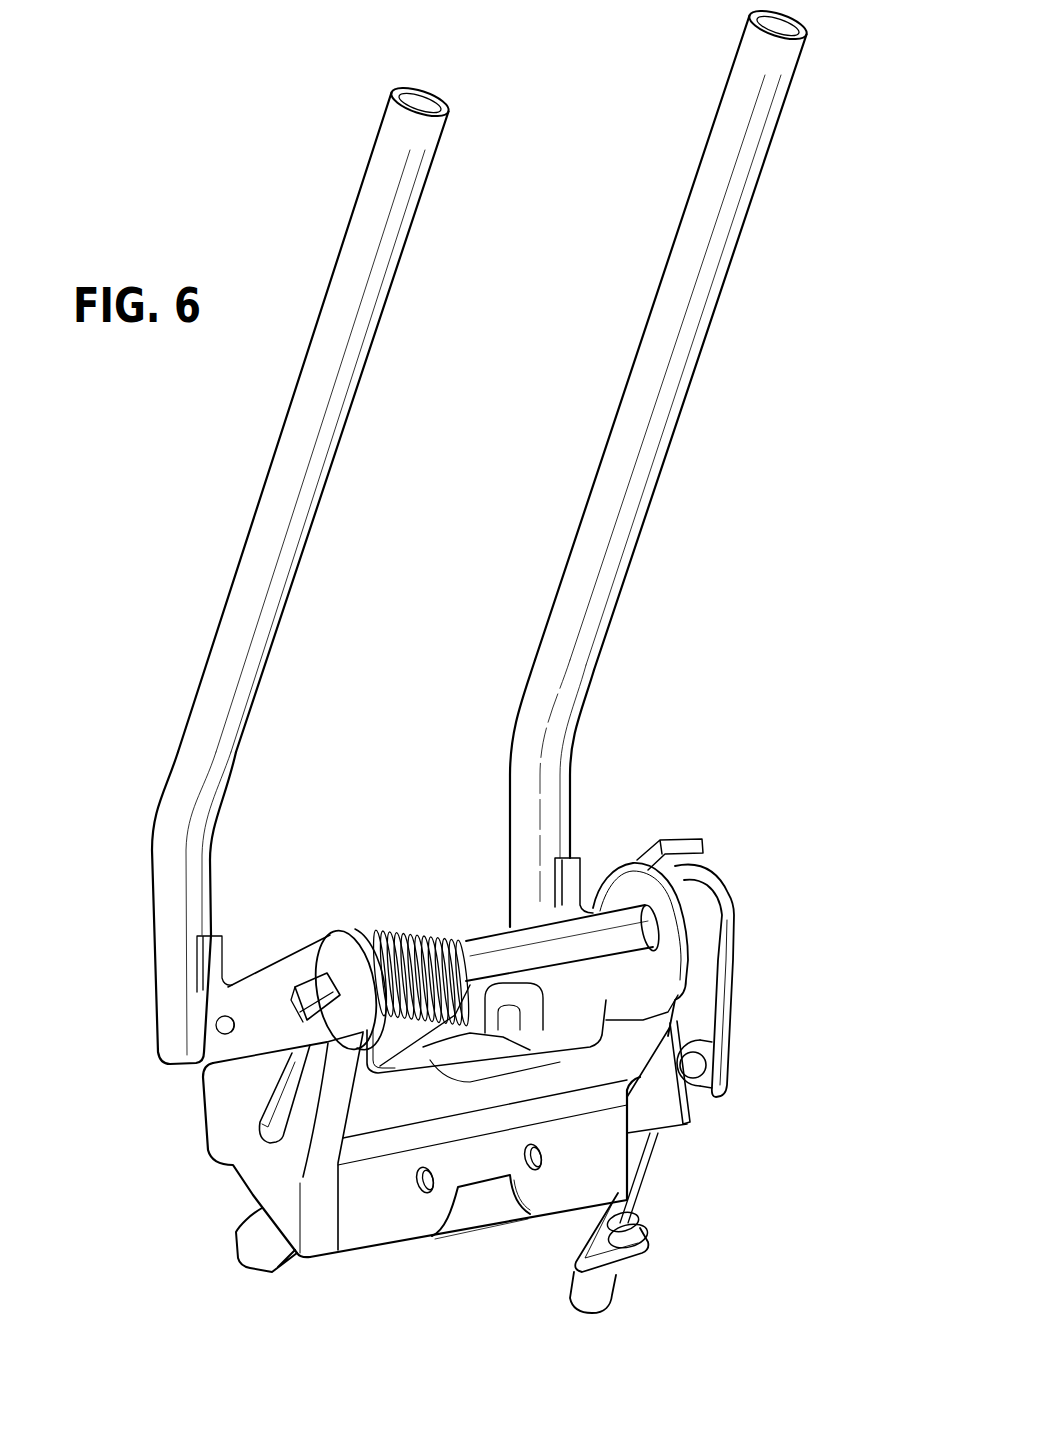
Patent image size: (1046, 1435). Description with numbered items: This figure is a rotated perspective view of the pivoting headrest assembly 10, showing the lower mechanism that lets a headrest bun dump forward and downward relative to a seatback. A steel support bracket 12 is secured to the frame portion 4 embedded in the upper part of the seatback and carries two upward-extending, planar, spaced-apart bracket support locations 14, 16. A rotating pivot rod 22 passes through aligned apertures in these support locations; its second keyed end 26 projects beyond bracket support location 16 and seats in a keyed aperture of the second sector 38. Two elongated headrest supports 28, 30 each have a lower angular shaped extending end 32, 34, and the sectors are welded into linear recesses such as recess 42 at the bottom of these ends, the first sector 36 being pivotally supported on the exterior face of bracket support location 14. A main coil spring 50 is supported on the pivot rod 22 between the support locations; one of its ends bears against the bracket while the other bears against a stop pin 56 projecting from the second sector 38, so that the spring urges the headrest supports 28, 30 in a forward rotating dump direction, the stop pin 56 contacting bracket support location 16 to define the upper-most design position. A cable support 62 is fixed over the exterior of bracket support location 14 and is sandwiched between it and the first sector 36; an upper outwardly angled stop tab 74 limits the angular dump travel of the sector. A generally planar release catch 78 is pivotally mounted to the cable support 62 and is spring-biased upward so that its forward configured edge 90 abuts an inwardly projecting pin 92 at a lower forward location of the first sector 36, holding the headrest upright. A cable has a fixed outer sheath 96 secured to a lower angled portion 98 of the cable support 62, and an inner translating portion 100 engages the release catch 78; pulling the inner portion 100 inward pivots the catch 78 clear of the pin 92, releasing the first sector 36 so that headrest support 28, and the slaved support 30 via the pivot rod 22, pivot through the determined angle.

The headrest assembly 10 is at (763, 709).
The headrest support 30 is at (265, 541).
The lower angular shaped extending end 34 is at (165, 947).
The headrest support 28 is at (588, 517).
The lower angular shaped extending end 32 is at (552, 796).
The linear extending recess 42 is at (190, 995).
The stop pin 56 is at (216, 1030).
The second keyed end 26 is at (315, 990).
The second sector 38 is at (350, 930).
The main coil spring 50 is at (402, 928).
The pivot rod 22 is at (490, 948).
The bracket support location 14 is at (633, 877).
The stop tab 74 is at (677, 833).
The first sector 36 is at (713, 887).
The bracket support location 16 is at (210, 1118).
The support bracket 12 is at (370, 1237).
The frame portion 4 is at (473, 1215).
The cable support 62 is at (673, 1033).
The forward configured edge 90 is at (673, 1130).
The inwardly projecting pin 92 is at (702, 1073).
The release catch 78 is at (650, 1127).
The inner translating portion 100 is at (650, 1183).
The lower angled portion 98 is at (649, 1247).
The fixed outer sheath 96 is at (605, 1290).